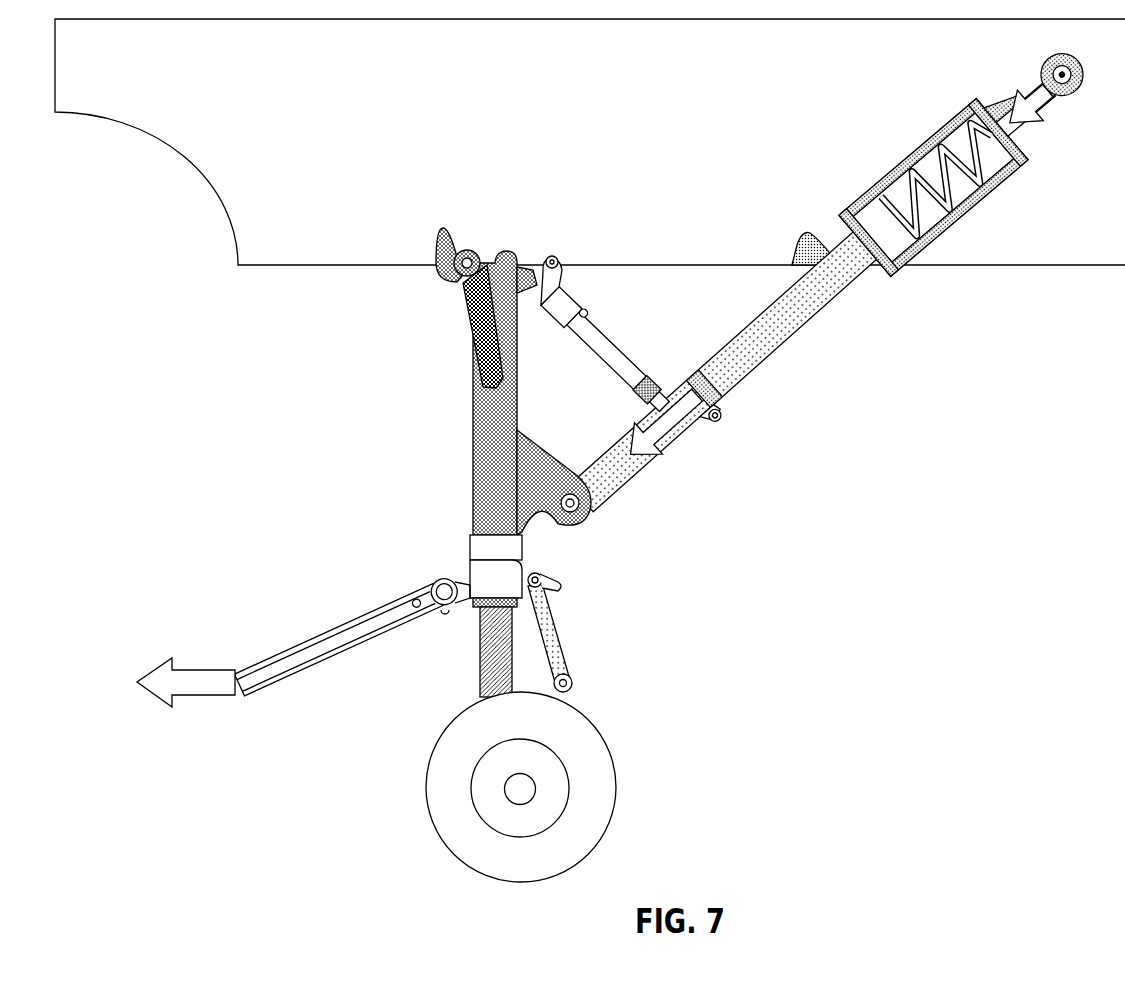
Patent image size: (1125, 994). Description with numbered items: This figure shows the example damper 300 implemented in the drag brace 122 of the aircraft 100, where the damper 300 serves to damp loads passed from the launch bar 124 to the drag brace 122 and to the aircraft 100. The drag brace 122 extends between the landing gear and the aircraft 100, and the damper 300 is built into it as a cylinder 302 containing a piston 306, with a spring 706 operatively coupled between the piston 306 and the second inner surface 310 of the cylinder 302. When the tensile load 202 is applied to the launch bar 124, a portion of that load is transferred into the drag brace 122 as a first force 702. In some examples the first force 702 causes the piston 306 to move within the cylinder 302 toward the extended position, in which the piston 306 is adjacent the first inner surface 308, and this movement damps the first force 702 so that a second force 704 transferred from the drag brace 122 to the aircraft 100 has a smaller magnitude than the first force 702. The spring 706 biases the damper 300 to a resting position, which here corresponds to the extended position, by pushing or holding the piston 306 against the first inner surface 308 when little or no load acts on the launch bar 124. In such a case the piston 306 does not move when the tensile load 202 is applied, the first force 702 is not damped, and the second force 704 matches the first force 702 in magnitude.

The aircraft 100 is at (190, 163).
The drag brace 122 is at (730, 374).
The launch bar 124 is at (328, 632).
The tensile load 202 is at (160, 663).
The damper 300 is at (935, 180).
The cylinder 302 is at (1007, 183).
The piston 306 is at (860, 197).
The first inner surface 308 is at (907, 263).
The second inner surface 310 is at (955, 112).
The first force 702 is at (665, 438).
The second force 704 is at (1023, 93).
The spring 706 is at (953, 203).